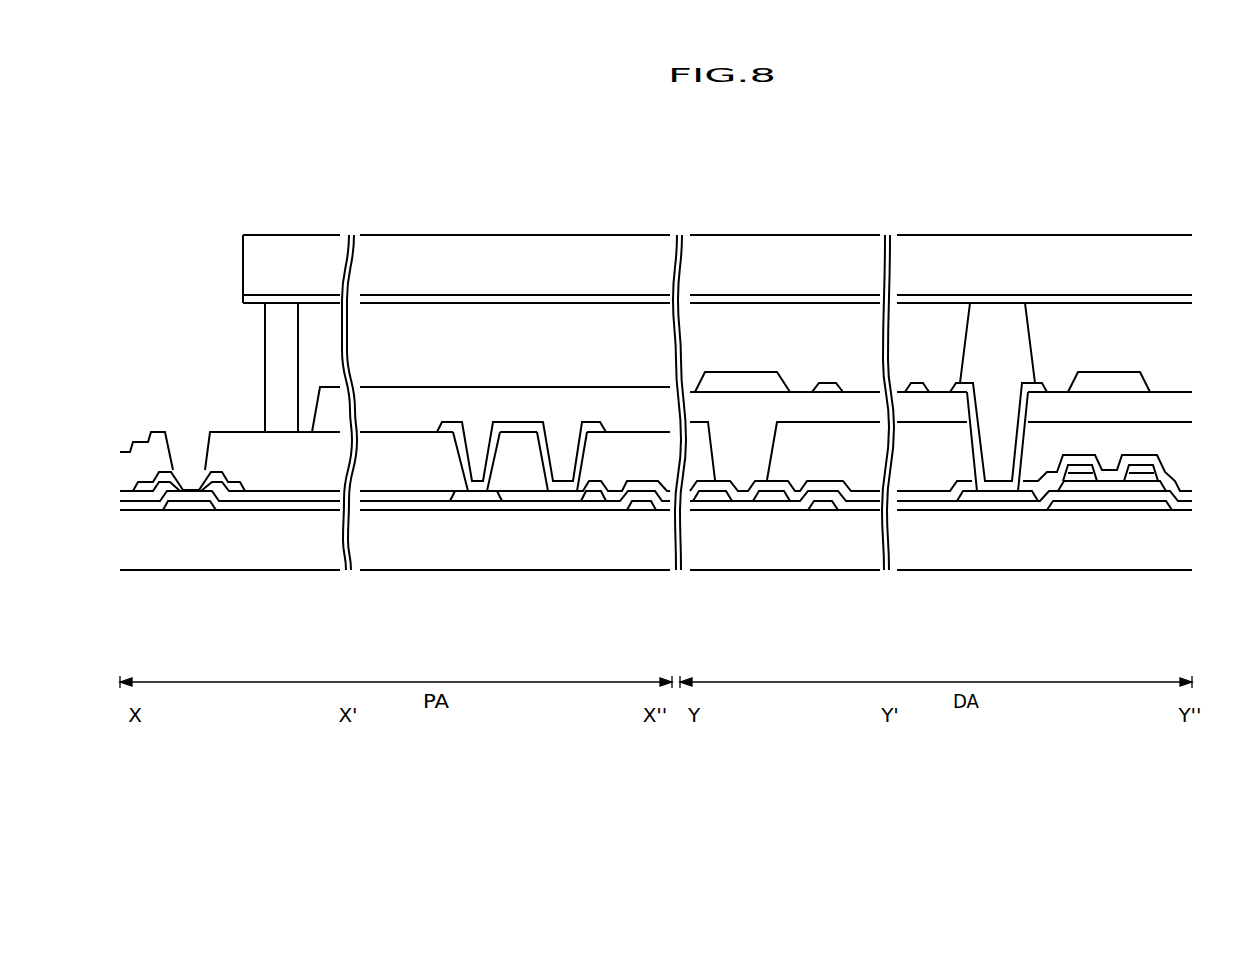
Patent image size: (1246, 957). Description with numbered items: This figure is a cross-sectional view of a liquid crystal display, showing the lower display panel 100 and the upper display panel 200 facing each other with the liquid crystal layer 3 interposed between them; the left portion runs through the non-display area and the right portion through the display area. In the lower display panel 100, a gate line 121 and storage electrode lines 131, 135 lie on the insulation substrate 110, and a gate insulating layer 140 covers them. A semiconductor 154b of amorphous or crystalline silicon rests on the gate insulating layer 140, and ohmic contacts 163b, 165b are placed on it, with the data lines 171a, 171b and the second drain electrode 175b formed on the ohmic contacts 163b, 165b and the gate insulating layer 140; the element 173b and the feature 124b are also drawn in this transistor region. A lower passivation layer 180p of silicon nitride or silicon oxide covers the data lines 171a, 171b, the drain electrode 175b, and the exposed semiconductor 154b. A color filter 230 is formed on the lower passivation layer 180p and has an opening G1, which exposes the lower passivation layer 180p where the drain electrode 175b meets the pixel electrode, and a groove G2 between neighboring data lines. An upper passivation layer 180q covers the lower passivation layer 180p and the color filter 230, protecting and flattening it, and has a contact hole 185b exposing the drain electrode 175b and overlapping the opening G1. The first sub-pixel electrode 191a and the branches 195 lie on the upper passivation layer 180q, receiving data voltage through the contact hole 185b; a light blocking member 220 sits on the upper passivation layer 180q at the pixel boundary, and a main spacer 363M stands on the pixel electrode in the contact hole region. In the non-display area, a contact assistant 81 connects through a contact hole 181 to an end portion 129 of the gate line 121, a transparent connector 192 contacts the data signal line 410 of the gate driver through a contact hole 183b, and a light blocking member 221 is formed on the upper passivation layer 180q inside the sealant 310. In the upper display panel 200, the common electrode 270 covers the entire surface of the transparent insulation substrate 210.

The upper display panel 200 is at (1200, 235).
The transparent insulation substrate 210 is at (545, 250).
The common electrode 270 is at (453, 300).
The main spacer 363M is at (998, 323).
The sealant 310 is at (277, 338).
The light blocking member 221 is at (383, 398).
The contact hole 183b is at (497, 458).
The transparent connector 192 is at (522, 428).
The groove G2 is at (713, 452).
The light blocking member 220 is at (738, 385).
The upper passivation layer 180q is at (773, 410).
The branch 195 is at (826, 380).
The first sub-pixel electrode 191a is at (915, 380).
The opening G1 is at (987, 440).
The contact hole 185b is at (1006, 437).
The color filter 230 is at (795, 457).
The contact hole 181 is at (183, 478).
The contact assistant 81 is at (222, 478).
The insulation substrate 110 is at (143, 548).
The end portion of gate line 129 is at (180, 507).
The lower passivation layer 180p is at (238, 497).
The gate insulating layer 140 is at (282, 507).
The data signal line 410 is at (472, 495).
The storage electrode line 131 is at (563, 507).
The gate line 121 is at (638, 507).
The data line 171a is at (708, 503).
The data line 171b is at (768, 505).
The storage electrode line 135 is at (823, 507).
The second drain electrode 175b is at (1027, 507).
The ohmic contact 165b is at (1078, 475).
The gate electrode 124b is at (1097, 507).
The semiconductor 154b is at (1112, 483).
The ohmic contact 163b is at (1132, 477).
The drain electrode 173b is at (1150, 475).
The liquid crystal layer 3 is at (1200, 303).
The lower display panel 100 is at (1200, 570).